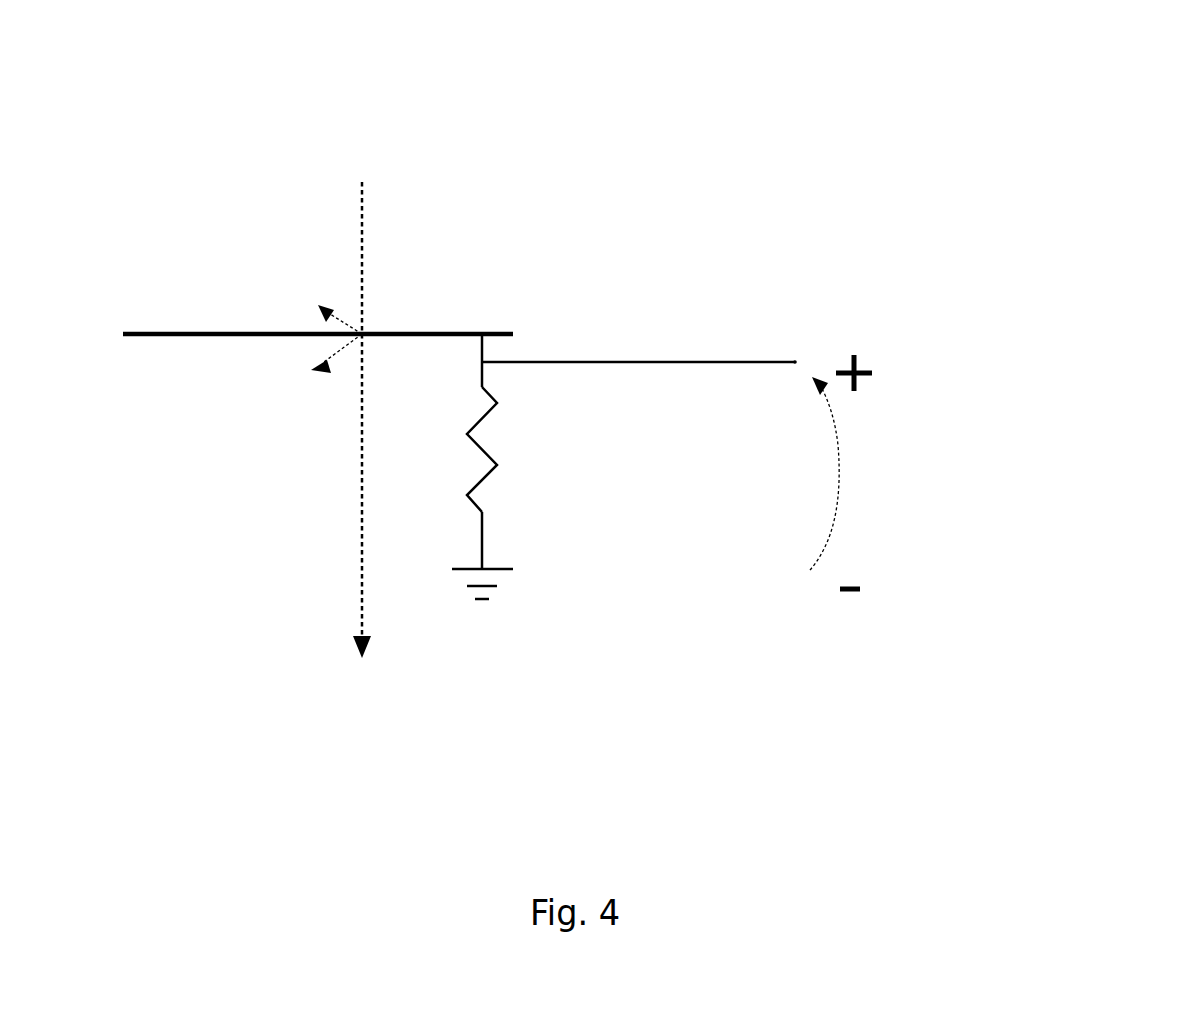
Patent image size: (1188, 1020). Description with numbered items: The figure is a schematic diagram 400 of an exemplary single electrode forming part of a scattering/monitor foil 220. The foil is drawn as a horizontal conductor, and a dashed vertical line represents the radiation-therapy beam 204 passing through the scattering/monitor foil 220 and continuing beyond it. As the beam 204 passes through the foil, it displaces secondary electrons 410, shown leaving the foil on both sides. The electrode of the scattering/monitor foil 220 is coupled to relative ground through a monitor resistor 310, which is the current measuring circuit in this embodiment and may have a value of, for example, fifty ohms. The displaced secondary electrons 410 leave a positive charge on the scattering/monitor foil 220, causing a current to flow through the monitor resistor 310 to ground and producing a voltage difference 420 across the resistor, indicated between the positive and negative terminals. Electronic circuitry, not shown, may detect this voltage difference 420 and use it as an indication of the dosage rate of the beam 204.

The schematic diagram 400 is at (590, 48).
The radiation-therapy beam 204 is at (363, 258).
The scattering/monitor foil 220 is at (413, 328).
The monitor resistor 310 is at (492, 430).
The voltage difference 420 is at (852, 466).
The secondary electrons 410 is at (309, 291).